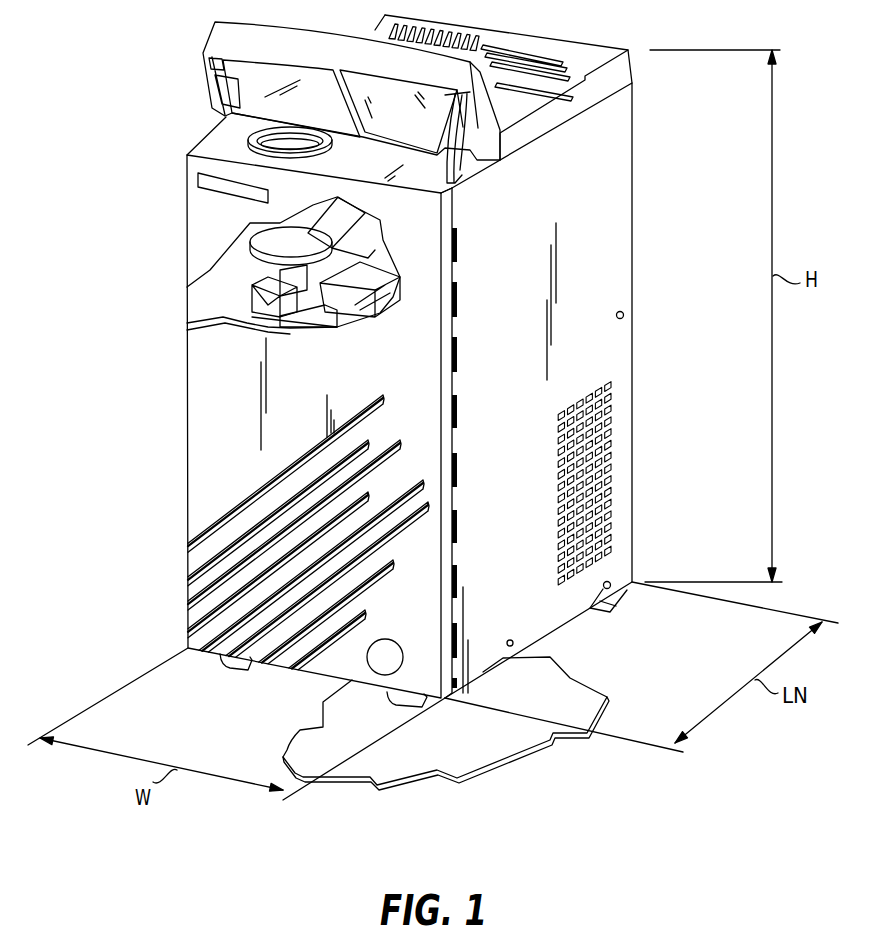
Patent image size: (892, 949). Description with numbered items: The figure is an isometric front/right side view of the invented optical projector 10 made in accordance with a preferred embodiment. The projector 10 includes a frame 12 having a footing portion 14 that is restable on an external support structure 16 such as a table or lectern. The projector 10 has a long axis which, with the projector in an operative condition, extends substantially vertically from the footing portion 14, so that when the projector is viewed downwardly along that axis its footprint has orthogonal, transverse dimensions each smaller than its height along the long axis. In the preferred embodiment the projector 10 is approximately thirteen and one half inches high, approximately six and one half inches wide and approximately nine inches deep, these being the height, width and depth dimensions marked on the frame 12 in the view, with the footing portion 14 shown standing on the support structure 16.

The optical projector 10 is at (160, 318).
The frame 12 is at (623, 220).
The footing portion 14 is at (233, 665).
The external support structure 16 is at (595, 695).